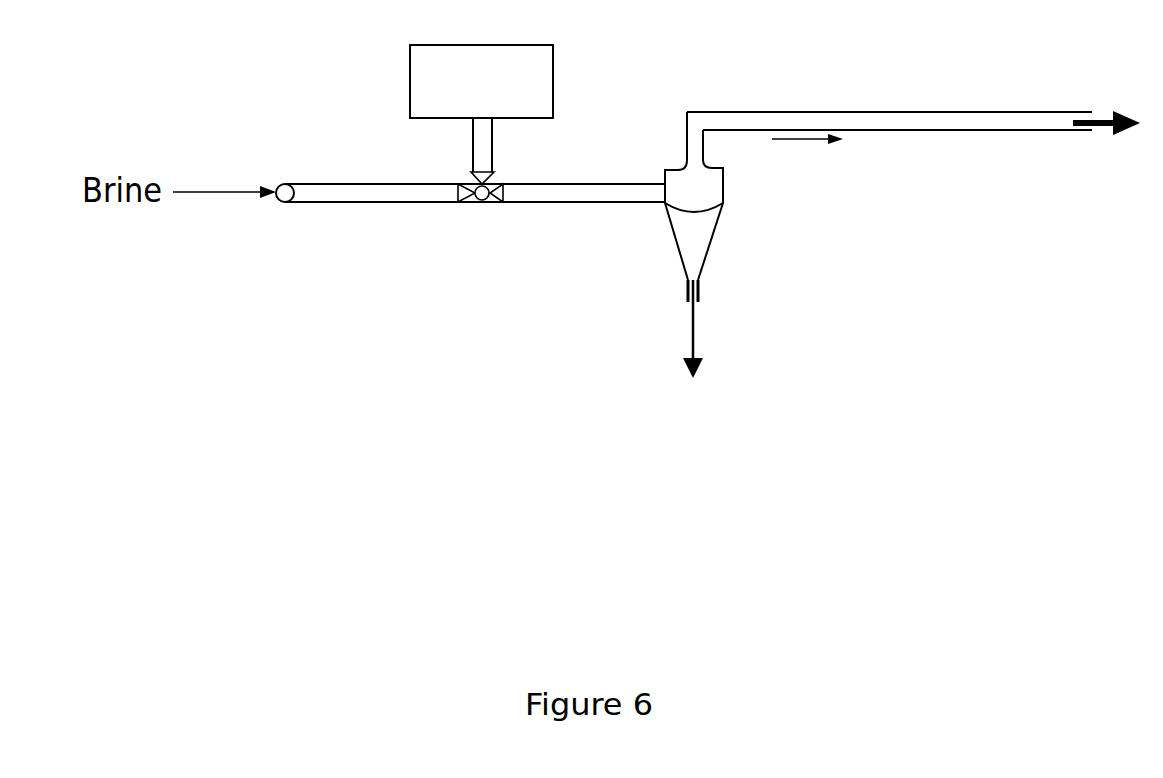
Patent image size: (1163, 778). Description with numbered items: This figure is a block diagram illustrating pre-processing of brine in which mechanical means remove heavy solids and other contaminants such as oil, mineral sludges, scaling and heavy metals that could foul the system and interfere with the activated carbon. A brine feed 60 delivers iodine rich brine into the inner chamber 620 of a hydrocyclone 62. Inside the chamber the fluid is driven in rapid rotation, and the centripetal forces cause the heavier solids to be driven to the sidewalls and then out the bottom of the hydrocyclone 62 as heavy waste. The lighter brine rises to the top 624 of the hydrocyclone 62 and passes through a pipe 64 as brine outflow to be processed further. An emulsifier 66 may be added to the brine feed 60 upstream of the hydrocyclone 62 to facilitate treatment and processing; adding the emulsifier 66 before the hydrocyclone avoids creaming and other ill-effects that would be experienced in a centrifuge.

The brine feed 60 is at (340, 190).
The hydrocyclone 62 is at (679, 268).
The pipe 64 is at (812, 120).
The emulsifier 66 is at (420, 76).
The inner chamber 620 is at (700, 232).
The top 624 is at (666, 149).